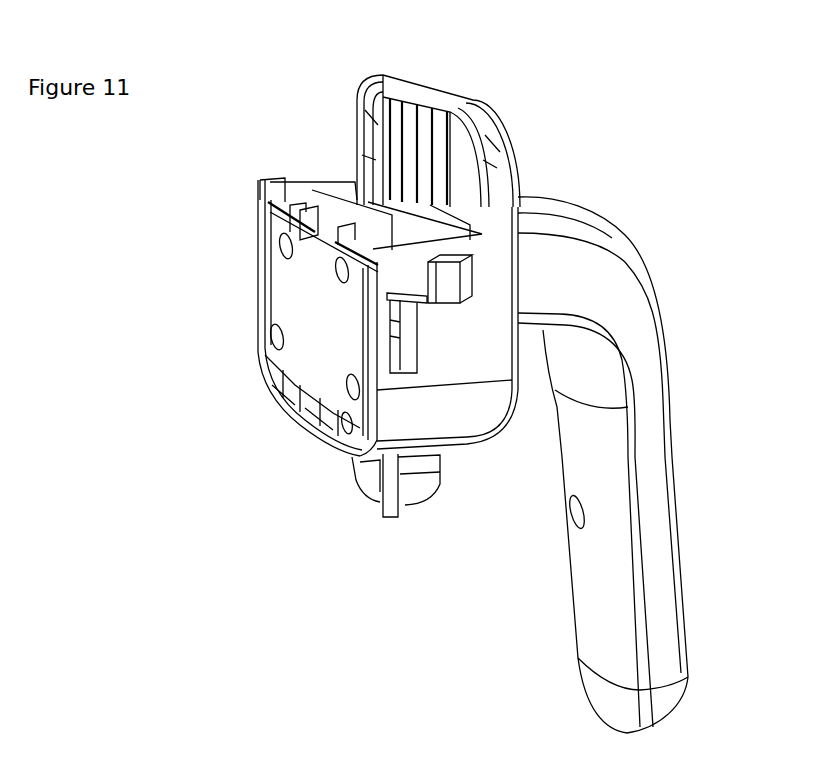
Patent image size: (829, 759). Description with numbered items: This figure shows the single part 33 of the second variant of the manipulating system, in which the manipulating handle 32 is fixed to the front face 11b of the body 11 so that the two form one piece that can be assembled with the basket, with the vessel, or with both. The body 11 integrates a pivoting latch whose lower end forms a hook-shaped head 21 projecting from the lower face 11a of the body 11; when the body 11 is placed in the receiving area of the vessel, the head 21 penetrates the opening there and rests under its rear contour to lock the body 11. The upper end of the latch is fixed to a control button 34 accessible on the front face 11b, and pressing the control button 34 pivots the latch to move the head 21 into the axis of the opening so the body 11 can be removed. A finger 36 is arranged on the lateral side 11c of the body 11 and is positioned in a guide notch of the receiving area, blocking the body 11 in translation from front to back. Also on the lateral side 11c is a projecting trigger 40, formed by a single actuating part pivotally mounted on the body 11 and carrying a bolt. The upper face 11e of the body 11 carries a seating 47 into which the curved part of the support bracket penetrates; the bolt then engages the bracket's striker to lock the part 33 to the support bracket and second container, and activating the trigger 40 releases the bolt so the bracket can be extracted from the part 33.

The body 11 is at (252, 250).
The lower face of the body 11a is at (452, 450).
The front face of the body 11b is at (513, 162).
The lateral side of the body 11c is at (452, 370).
The upper face of the body 11e is at (354, 188).
The head 21 is at (367, 489).
The manipulating handle 32 is at (681, 492).
The part 33 is at (694, 88).
The control button 34 is at (425, 85).
The finger 36 is at (407, 350).
The trigger 40 is at (488, 285).
The seating 47 is at (313, 218).